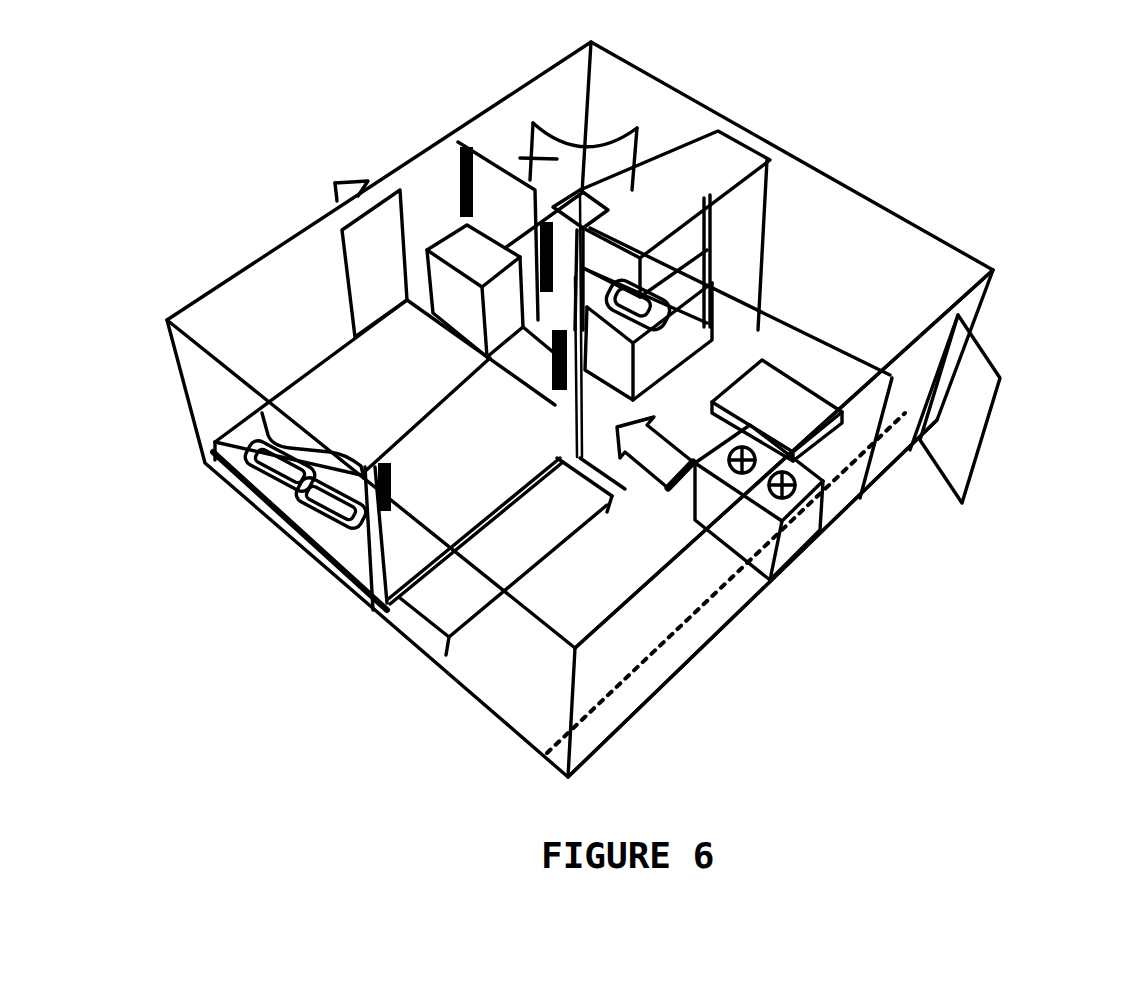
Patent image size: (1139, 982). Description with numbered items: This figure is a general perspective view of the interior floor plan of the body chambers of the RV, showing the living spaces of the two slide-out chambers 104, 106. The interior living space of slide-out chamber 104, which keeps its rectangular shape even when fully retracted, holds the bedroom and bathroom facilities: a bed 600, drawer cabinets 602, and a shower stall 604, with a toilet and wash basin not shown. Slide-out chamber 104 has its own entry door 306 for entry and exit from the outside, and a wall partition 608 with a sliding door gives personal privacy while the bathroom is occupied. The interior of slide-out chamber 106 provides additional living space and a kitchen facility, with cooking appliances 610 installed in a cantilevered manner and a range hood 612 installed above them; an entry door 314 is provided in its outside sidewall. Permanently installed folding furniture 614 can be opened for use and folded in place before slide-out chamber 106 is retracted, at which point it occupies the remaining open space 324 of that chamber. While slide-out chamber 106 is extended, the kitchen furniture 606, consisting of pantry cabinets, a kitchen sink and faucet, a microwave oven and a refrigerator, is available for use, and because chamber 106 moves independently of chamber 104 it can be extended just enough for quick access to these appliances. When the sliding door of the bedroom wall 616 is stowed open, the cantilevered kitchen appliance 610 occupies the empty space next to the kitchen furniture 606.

The slide-out chamber 104 is at (273, 233).
The slide-out chamber 106 is at (688, 687).
The entry door 306 is at (332, 193).
The entry door 314 is at (957, 443).
The open space 324 is at (720, 620).
The bed 600 is at (385, 400).
The drawer cabinets 602 is at (477, 260).
The shower stall 604 is at (531, 180).
The kitchen furniture 606 is at (727, 163).
The wall partition 608 is at (455, 185).
The cooking appliances 610 is at (787, 525).
The range hood 612 is at (787, 398).
The folding furniture 614 is at (437, 600).
The bedroom wall 616 is at (473, 417).